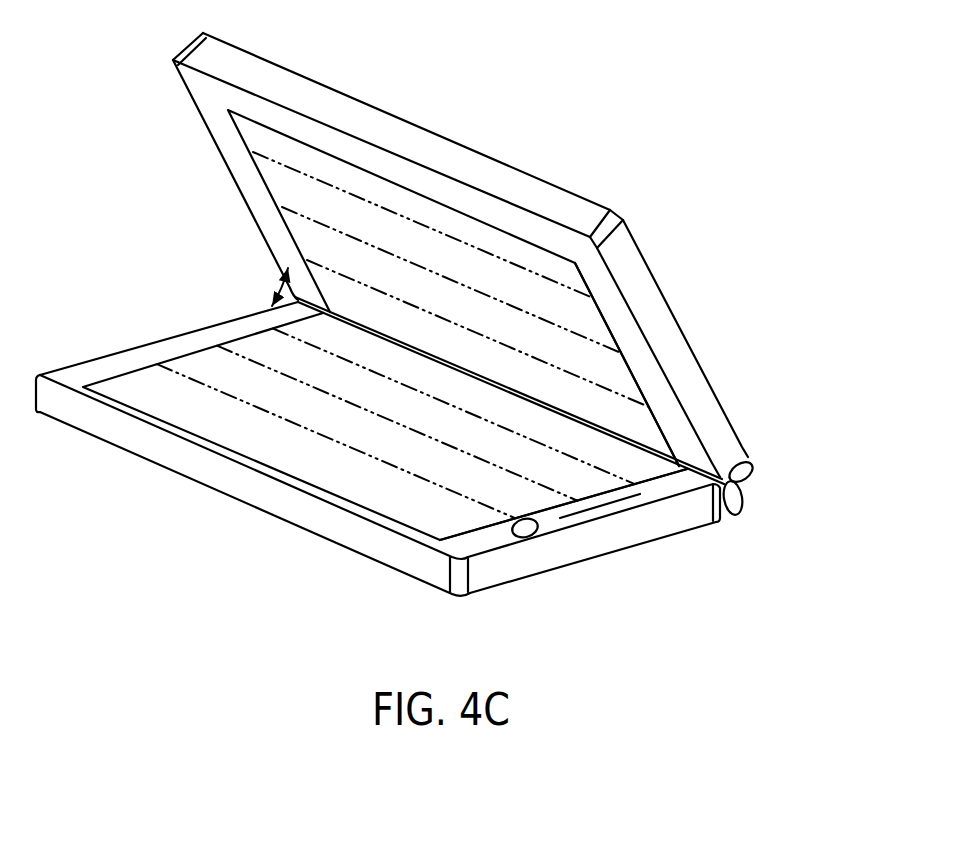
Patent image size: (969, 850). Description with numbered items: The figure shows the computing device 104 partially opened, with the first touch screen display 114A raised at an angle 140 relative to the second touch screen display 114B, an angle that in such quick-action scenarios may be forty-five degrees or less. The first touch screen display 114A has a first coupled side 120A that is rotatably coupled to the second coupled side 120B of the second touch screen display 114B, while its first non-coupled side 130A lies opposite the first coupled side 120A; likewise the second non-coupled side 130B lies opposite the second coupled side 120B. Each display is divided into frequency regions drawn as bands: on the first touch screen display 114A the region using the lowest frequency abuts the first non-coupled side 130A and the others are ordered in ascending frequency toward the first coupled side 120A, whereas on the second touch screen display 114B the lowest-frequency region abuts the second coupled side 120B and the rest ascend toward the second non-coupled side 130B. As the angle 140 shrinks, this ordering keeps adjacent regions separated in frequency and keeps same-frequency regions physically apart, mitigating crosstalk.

The computing device 104 is at (546, 104).
The first non-coupled side 130A is at (388, 116).
The first touch screen display 114A is at (292, 183).
The first coupled side 120A is at (397, 343).
The angle 140 is at (274, 289).
The second touch screen display 114B is at (114, 384).
The second non-coupled side 130B is at (208, 471).
The second coupled side 120B is at (473, 383).